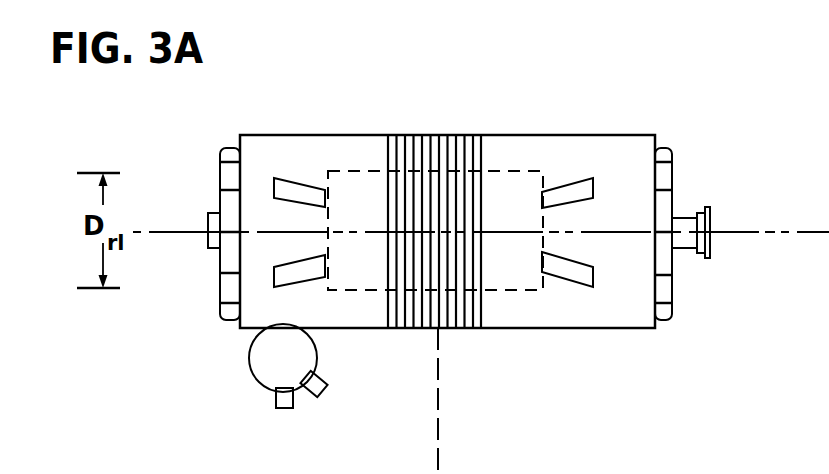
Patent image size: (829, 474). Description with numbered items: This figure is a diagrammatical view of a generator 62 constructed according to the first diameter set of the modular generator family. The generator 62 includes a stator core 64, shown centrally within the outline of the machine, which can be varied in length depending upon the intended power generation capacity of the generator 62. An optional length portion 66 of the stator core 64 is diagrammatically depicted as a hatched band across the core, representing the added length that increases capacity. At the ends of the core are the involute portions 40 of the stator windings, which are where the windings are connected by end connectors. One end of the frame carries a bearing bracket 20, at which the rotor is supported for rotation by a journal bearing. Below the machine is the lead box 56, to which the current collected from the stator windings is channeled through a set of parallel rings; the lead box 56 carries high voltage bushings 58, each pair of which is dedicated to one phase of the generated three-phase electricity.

The generator 62 is at (551, 103).
The optional length portion 66 is at (447, 136).
The stator core 64 is at (512, 273).
The involute portions 40 is at (565, 182).
The bearing bracket 20 is at (667, 175).
The lead box 56 is at (285, 410).
The high voltage bushings 58 is at (318, 388).